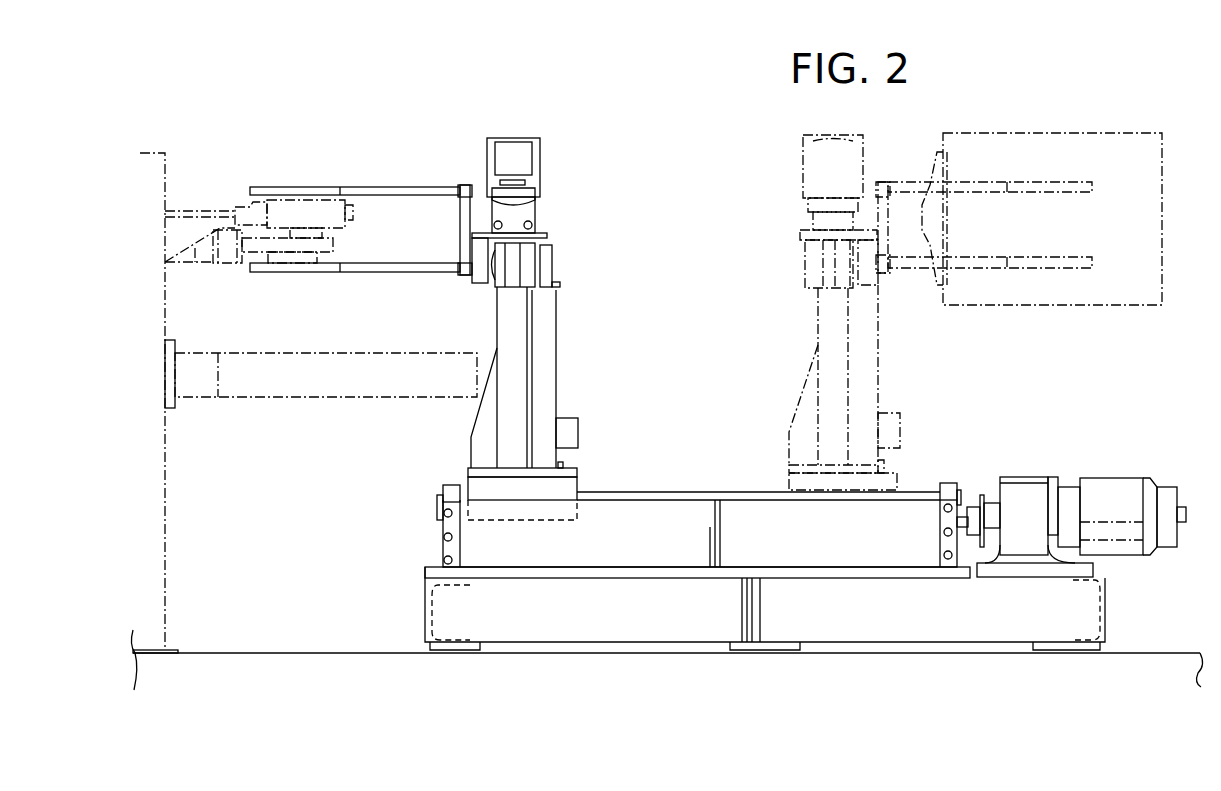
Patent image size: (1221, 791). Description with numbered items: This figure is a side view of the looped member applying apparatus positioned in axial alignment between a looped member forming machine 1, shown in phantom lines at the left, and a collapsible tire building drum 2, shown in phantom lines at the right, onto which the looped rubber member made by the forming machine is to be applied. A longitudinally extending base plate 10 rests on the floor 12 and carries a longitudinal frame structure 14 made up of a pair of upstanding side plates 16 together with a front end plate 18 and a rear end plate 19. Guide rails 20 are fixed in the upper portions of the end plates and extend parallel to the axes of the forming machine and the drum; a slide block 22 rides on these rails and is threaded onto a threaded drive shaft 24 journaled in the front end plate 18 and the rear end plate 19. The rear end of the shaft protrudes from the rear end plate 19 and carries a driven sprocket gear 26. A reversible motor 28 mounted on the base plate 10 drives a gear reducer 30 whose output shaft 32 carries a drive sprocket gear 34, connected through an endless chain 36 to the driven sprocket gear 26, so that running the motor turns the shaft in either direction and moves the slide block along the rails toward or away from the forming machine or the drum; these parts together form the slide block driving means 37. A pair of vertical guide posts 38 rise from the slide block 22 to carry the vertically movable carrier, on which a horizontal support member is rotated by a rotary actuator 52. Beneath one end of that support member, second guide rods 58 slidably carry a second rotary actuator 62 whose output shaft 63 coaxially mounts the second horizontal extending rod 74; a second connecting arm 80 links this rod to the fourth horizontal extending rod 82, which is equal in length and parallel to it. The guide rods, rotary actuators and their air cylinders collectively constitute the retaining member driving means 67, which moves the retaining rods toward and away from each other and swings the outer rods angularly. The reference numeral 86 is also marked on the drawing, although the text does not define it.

The looped member forming machine 1 is at (348, 222).
The collapsible tire building drum 2 is at (1042, 133).
The base plate 10 is at (1105, 600).
The floor 12 is at (1168, 653).
The frame structure 14 is at (695, 480).
The side plates 16 is at (748, 544).
The front end plate 18 is at (452, 485).
The rear end plate 19 is at (947, 483).
The guide rails 20 is at (740, 492).
The slide block 22 is at (578, 490).
The threaded drive shaft 24 is at (958, 520).
The driven sprocket gear 26 is at (975, 540).
The reversible motor 28 is at (1118, 490).
The gear reducer 30 is at (1033, 477).
The output shaft 32 is at (990, 503).
The drive sprocket gear 34 is at (982, 495).
The endless chain 36 is at (1000, 535).
The slide block driving means 37 is at (1030, 443).
The vertical guide posts 38 is at (497, 338).
The rotary actuator 52 is at (515, 147).
The second guide rods 58 is at (494, 222).
The second rotary actuator 62 is at (515, 287).
The output shaft 63 is at (490, 278).
The retaining member driving means 67 is at (557, 201).
The second horizontal extending rod 74 is at (388, 272).
The second connecting arm 80 is at (470, 228).
The fourth horizontal extending rod 82 is at (400, 187).
The transfer position 86 is at (678, 432).